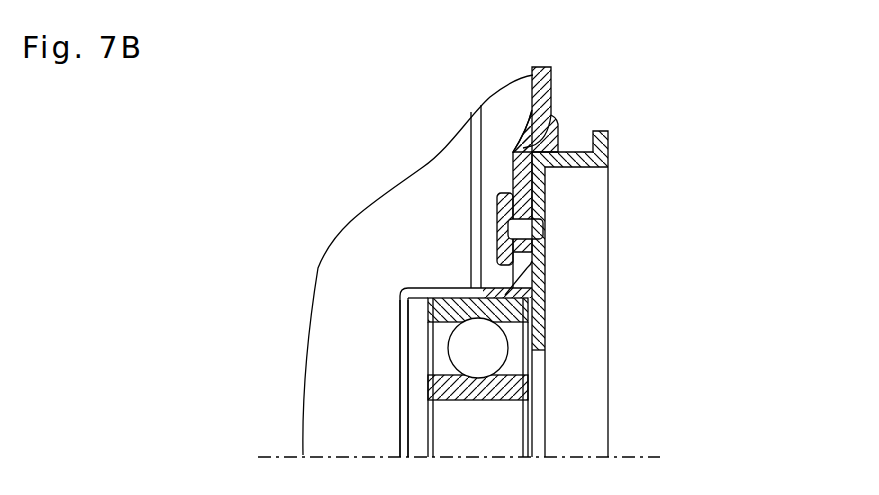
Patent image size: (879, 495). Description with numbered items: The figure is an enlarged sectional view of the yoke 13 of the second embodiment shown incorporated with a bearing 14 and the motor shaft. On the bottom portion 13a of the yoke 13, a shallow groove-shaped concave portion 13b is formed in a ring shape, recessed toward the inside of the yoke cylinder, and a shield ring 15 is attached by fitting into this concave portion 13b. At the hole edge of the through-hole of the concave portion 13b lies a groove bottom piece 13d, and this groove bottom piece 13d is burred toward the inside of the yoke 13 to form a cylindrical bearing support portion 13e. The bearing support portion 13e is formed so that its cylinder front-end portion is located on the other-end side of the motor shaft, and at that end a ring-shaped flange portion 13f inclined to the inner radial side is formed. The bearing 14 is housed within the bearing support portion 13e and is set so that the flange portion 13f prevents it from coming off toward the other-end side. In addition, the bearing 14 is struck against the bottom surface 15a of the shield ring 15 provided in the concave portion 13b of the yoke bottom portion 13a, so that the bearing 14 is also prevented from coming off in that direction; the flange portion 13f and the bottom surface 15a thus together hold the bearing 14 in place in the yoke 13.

The yoke 13 is at (486, 260).
The bottom portion 13a is at (543, 77).
The concave portion 13b is at (523, 193).
The groove bottom piece 13d is at (530, 205).
The bearing support portion 13e is at (452, 290).
The flange portion 13f is at (400, 297).
The bearing 14 is at (447, 383).
The shield ring 15 is at (654, 294).
The bottom surface 15a is at (537, 267).